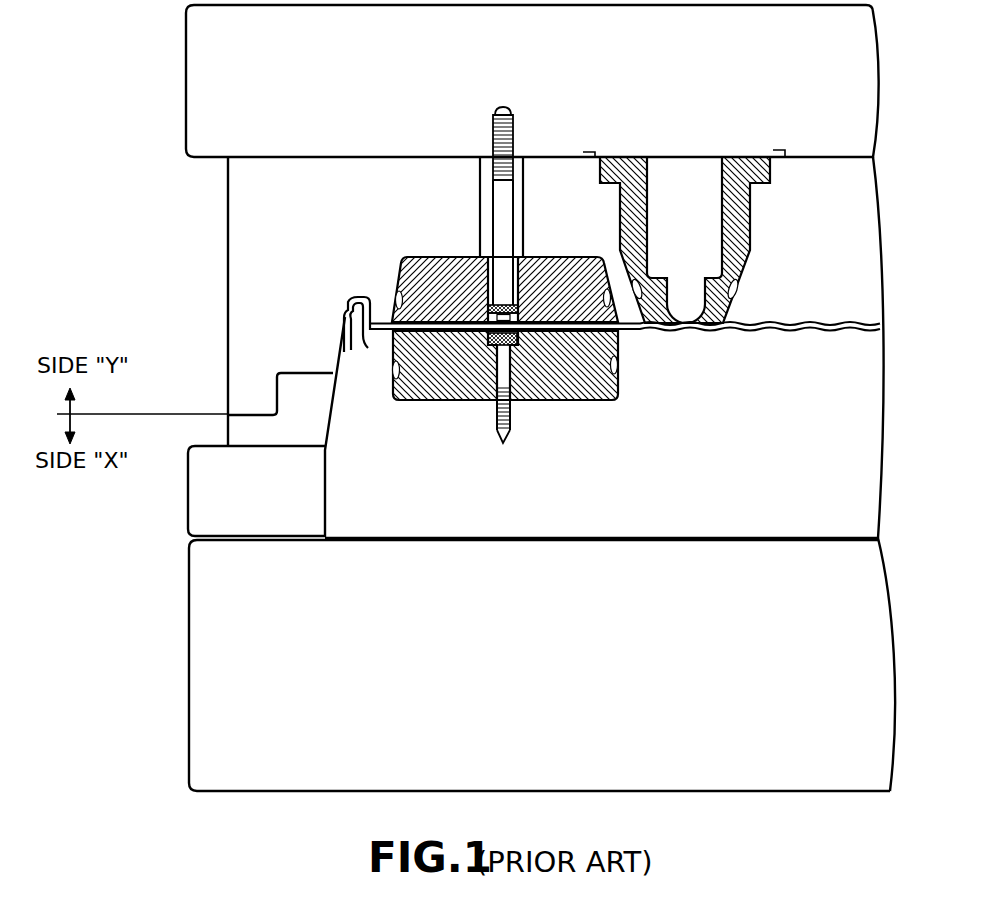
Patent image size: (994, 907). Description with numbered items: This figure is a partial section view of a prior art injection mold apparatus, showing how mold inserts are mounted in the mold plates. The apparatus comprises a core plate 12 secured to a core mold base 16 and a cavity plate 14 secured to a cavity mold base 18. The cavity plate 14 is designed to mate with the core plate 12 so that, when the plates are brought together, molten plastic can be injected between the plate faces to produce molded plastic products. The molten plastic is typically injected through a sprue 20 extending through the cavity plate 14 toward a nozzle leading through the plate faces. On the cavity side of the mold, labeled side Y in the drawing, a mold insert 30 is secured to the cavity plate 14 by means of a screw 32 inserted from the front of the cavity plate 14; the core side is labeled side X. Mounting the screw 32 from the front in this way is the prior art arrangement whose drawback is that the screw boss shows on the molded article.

The core plate 12 is at (350, 487).
The cavity plate 14 is at (243, 207).
The core mold base 16 is at (212, 608).
The cavity mold base 18 is at (223, 95).
The sprue 20 is at (692, 183).
The mold insert 30 is at (407, 268).
The screw 32 is at (487, 313).